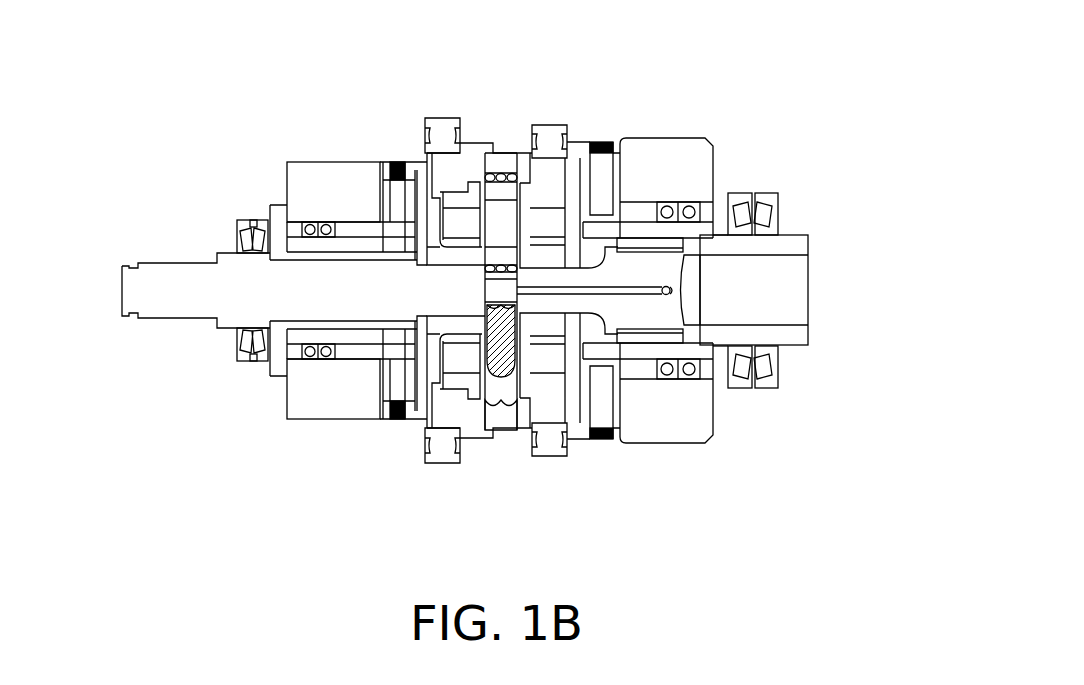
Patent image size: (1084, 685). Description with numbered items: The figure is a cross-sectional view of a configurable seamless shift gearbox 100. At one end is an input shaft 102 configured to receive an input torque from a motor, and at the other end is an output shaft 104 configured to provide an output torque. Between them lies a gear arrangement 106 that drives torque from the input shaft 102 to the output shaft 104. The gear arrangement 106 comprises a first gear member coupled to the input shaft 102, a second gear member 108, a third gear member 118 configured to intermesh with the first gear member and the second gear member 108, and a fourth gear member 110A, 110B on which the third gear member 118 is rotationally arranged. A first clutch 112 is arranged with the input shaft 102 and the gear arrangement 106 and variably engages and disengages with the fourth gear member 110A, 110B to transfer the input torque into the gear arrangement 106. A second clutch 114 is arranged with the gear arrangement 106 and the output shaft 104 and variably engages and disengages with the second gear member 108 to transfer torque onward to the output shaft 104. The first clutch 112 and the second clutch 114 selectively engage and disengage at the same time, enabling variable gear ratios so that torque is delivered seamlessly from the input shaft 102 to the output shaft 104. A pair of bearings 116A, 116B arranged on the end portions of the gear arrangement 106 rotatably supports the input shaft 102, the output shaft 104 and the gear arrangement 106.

The configurable seamless shift gearbox 100 is at (803, 30).
The input shaft 102 is at (690, 272).
The output shaft 104 is at (196, 281).
The gear arrangement 106 is at (533, 105).
The second gear member 108 is at (482, 460).
The fourth gear member 110A is at (568, 327).
The fourth gear member 110B is at (427, 318).
The first clutch 112 is at (680, 265).
The second clutch 114 is at (348, 267).
The bearing 116A is at (583, 267).
The bearing 116B is at (426, 266).
The third gear member 118 is at (459, 402).